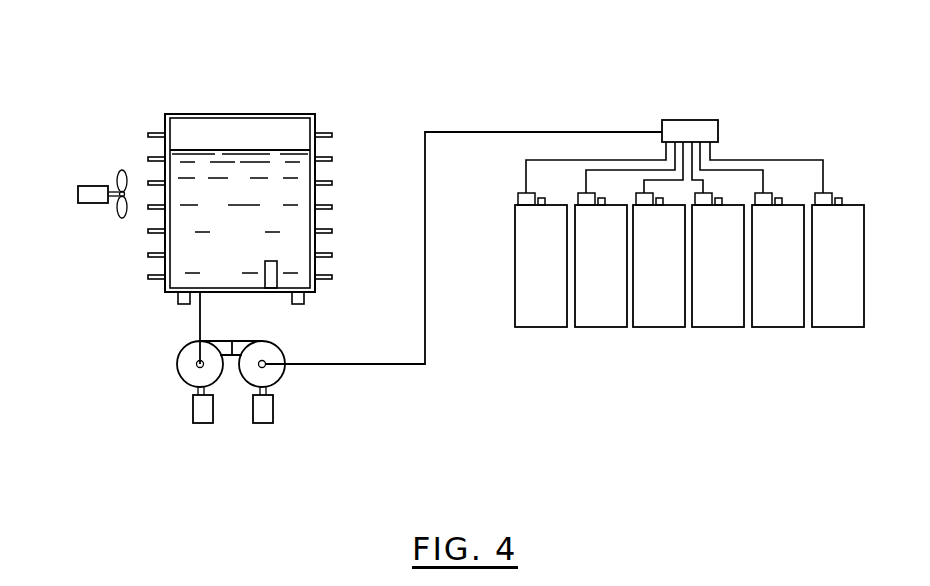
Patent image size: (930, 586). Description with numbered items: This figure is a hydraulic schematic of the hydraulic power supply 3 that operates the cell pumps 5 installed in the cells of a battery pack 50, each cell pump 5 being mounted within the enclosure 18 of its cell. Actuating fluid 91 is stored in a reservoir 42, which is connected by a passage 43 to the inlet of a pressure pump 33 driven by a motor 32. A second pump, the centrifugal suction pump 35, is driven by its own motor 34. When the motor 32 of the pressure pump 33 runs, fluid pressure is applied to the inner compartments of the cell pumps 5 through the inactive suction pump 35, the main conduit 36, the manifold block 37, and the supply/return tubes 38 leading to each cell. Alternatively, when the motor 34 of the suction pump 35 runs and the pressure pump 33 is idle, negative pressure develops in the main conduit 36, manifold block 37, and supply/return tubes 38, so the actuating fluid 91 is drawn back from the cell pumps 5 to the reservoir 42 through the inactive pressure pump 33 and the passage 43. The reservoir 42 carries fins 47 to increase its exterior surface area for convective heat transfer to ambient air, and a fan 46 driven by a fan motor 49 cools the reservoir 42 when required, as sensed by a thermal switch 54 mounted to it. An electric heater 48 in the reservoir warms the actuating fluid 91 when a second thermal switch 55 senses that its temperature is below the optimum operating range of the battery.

The hydraulic power supply 3 is at (158, 90).
The reservoir 42 is at (210, 125).
The actuating fluid 91 is at (273, 170).
The fins 47 is at (322, 133).
The electric heater 48 is at (276, 268).
The thermal switch 54 is at (178, 300).
The thermal switch 55 is at (300, 300).
The fan 46 is at (118, 168).
The fan motor 49 is at (94, 198).
The passage 43 is at (198, 338).
The pressure pump 33 is at (190, 373).
The centrifugal suction pump 35 is at (270, 375).
The motor 32 is at (203, 418).
The motor 34 is at (262, 418).
The main conduit 36 is at (575, 130).
The manifold block 37 is at (675, 130).
The supply/return tubes 38 is at (768, 158).
The battery pack 50 is at (680, 355).
The enclosure 18 is at (840, 315).
The cell pump 5 is at (826, 195).